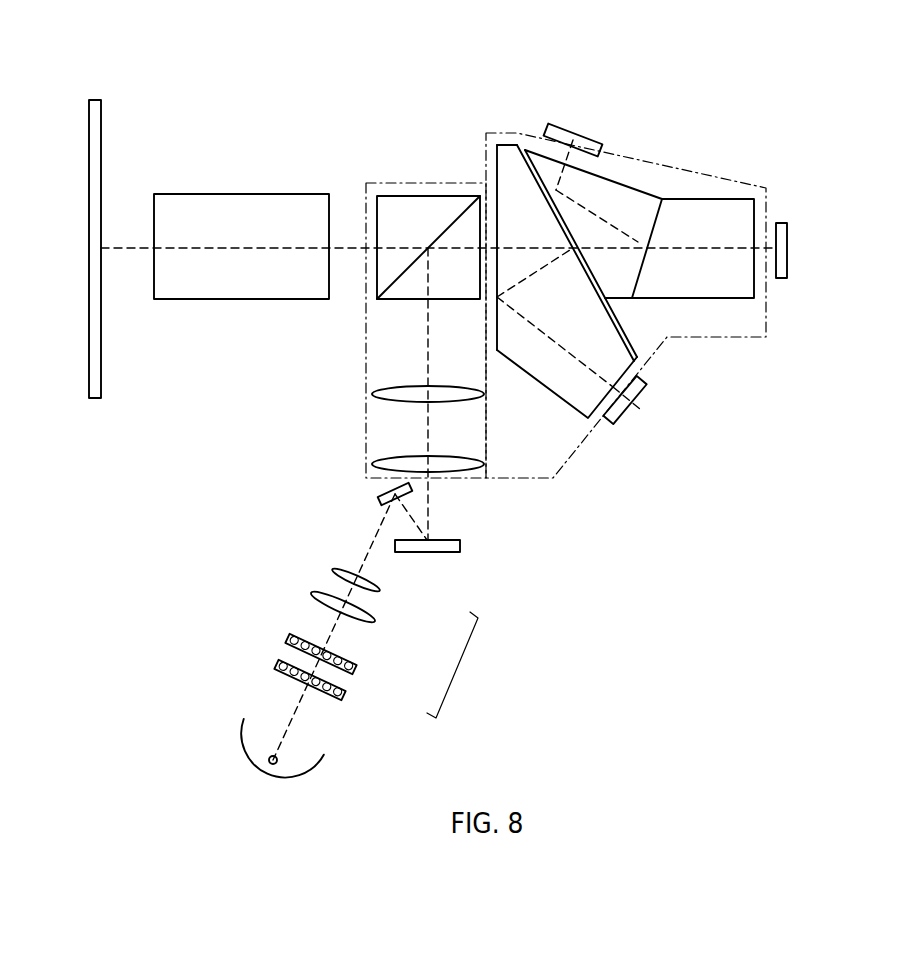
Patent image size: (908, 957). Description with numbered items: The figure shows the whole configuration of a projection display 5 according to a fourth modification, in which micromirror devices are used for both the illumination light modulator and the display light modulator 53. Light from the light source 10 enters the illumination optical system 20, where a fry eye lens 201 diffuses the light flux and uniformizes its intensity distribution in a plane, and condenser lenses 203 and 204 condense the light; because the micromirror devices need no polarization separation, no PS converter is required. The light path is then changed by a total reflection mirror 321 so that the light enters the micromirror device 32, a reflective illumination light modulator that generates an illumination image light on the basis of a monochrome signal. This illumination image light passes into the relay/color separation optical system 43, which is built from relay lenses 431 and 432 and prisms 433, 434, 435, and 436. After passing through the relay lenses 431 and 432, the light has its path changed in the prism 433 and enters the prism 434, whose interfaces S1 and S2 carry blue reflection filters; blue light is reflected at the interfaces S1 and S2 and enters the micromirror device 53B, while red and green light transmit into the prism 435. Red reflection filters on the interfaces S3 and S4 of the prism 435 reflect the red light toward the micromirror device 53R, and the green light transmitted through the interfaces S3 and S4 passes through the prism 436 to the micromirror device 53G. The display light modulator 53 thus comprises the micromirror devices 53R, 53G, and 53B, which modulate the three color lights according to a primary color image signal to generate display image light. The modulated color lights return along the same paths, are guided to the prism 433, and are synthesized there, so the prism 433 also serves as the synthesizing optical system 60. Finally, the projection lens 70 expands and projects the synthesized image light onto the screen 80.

The projection display 5 is at (824, 640).
The light source 10 is at (322, 758).
The illumination optical system 20 is at (459, 665).
The fry eye lens 201 is at (350, 713).
The condenser lens 203 is at (378, 618).
The condenser lens 204 is at (382, 590).
The micromirror device 32 is at (395, 548).
The total reflection mirror 321 is at (377, 497).
The relay lens 431 is at (372, 464).
The relay lens 432 is at (372, 394).
The prism 433 is at (428, 196).
The prism 434 is at (623, 330).
The prism 435 is at (620, 183).
The prism 436 is at (707, 199).
The relay/color separation optical system 43 is at (570, 458).
The synthesizing optical system 60 is at (426, 293).
The projection lens 70 is at (243, 194).
The screen 80 is at (96, 100).
The display light modulator 53 is at (725, 251).
The micromirror device 53R is at (576, 133).
The micromirror device 53G is at (790, 232).
The micromirror device 53B is at (628, 417).
The interface S1 is at (553, 172).
The interface S2 is at (495, 327).
The interface S3 is at (650, 263).
The interface S4 is at (550, 162).